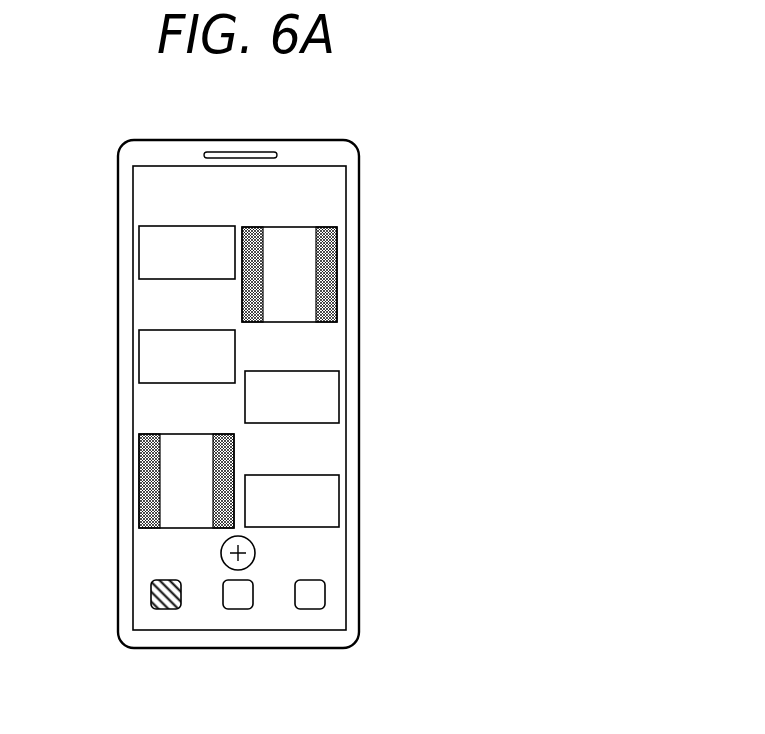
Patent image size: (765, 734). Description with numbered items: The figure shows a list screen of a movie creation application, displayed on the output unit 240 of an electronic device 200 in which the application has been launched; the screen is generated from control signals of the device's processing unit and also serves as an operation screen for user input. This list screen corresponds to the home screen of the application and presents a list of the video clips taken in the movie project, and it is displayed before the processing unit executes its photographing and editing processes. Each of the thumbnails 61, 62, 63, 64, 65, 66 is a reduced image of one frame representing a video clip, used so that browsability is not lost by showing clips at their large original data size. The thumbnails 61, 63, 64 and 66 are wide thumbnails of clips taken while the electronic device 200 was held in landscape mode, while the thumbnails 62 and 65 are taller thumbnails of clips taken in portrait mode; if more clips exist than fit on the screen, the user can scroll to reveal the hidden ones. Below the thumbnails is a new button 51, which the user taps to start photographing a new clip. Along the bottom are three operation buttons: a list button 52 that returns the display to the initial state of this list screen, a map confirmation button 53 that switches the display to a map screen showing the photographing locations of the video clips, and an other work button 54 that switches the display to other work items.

The electronic device 200 is at (302, 140).
The output unit 240 is at (340, 194).
The thumbnail 61 is at (180, 256).
The thumbnail 62 is at (297, 283).
The thumbnail 63 is at (180, 369).
The thumbnail 64 is at (296, 393).
The thumbnail 65 is at (180, 481).
The thumbnail 66 is at (296, 505).
The new button 51 is at (255, 553).
The list button 52 is at (165, 607).
The map confirmation button 53 is at (238, 602).
The other work button 54 is at (311, 602).